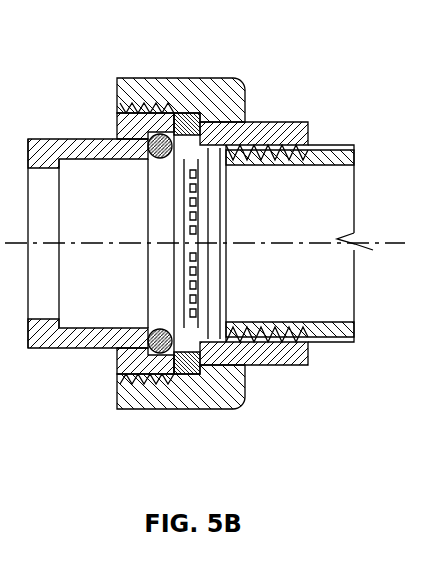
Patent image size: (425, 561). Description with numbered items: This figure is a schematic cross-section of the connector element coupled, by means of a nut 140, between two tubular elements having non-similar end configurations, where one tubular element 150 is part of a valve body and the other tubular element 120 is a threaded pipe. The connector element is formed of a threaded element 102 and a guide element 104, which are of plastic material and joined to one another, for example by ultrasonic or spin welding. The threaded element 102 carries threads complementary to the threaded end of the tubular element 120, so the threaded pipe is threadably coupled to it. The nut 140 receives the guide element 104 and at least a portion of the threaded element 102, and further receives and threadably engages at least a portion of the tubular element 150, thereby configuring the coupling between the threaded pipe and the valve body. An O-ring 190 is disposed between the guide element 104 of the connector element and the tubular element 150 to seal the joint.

The threaded element 102 is at (272, 140).
The guide element 104 is at (178, 372).
The tubular element 120 is at (335, 148).
The nut 140 is at (174, 100).
The tubular element 150 is at (66, 340).
The O-ring 190 is at (163, 331).